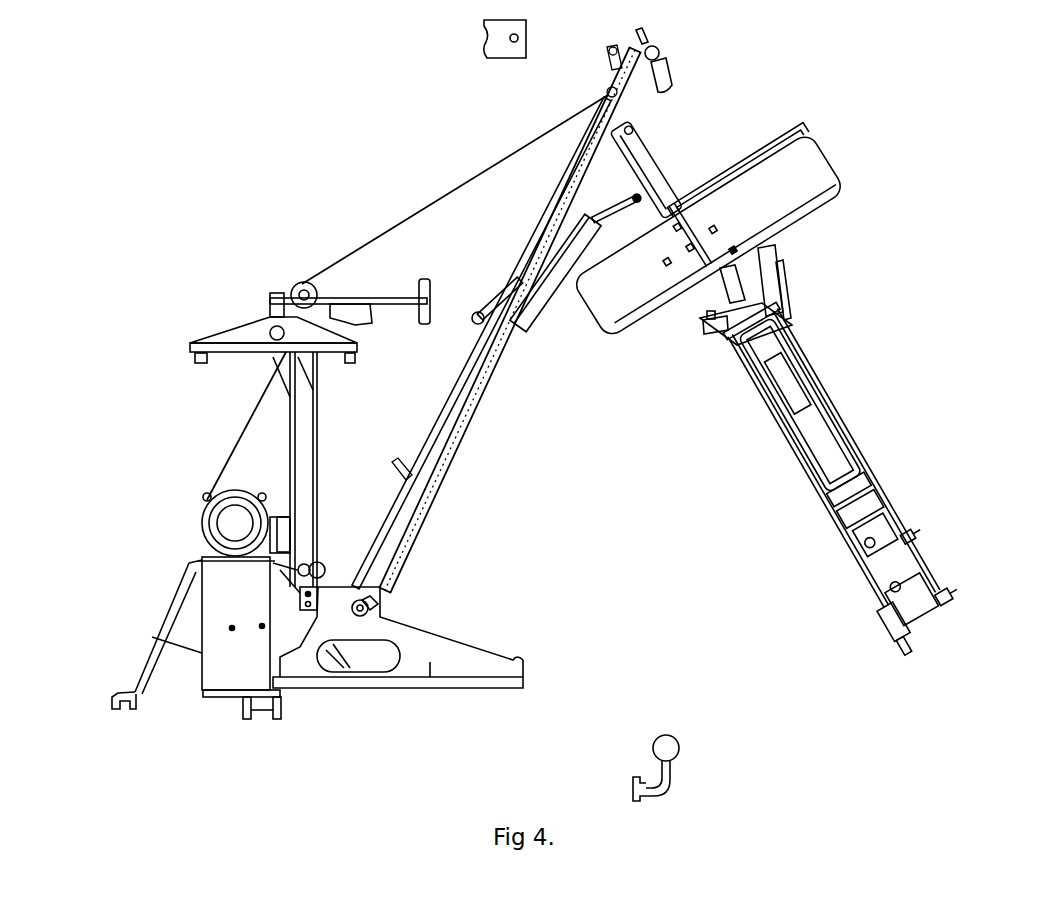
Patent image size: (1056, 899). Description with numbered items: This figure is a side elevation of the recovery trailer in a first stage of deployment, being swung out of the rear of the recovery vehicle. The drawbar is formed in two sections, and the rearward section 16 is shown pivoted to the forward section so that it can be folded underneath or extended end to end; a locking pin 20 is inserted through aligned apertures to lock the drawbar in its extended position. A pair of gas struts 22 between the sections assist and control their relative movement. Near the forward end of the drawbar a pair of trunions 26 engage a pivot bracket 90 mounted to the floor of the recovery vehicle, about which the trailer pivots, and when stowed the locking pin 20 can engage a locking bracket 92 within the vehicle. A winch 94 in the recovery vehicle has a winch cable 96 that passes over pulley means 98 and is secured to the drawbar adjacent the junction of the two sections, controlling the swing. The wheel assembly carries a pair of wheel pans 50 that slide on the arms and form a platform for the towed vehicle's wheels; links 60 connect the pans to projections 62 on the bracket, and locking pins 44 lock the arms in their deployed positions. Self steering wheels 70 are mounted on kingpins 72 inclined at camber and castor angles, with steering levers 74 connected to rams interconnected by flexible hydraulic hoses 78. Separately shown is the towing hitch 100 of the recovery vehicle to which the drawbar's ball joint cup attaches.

The rearward section 16 is at (583, 178).
The locking pin 20 is at (666, 50).
The gas struts 22 is at (527, 300).
The trunions 26 is at (372, 606).
The locking pins 44 is at (943, 598).
The wheel pans 50 is at (790, 417).
The links 60 is at (860, 505).
The projections 62 is at (907, 537).
The self steering wheels 70 is at (808, 188).
The kingpins 72 is at (782, 256).
The steering levers 74 is at (781, 278).
The flexible hydraulic hoses 78 is at (713, 333).
The pivot bracket 90 is at (432, 683).
The locking bracket 92 is at (505, 57).
The winch 94 is at (200, 515).
The winch cable 96 is at (462, 178).
The pulley means 98 is at (298, 285).
The towing hitch 100 is at (676, 748).